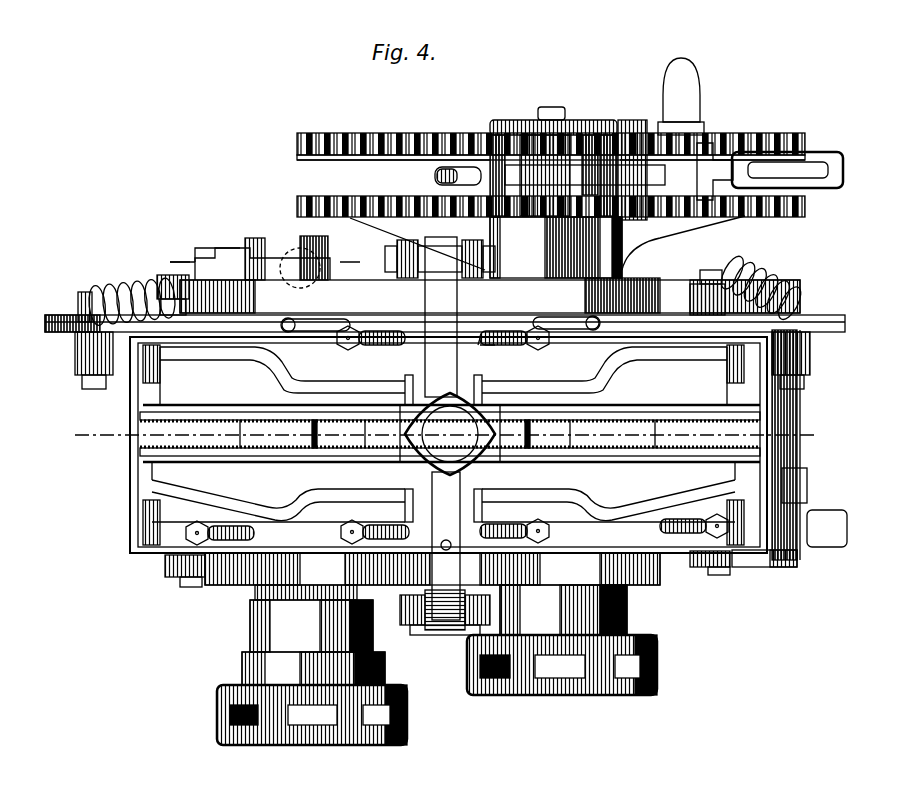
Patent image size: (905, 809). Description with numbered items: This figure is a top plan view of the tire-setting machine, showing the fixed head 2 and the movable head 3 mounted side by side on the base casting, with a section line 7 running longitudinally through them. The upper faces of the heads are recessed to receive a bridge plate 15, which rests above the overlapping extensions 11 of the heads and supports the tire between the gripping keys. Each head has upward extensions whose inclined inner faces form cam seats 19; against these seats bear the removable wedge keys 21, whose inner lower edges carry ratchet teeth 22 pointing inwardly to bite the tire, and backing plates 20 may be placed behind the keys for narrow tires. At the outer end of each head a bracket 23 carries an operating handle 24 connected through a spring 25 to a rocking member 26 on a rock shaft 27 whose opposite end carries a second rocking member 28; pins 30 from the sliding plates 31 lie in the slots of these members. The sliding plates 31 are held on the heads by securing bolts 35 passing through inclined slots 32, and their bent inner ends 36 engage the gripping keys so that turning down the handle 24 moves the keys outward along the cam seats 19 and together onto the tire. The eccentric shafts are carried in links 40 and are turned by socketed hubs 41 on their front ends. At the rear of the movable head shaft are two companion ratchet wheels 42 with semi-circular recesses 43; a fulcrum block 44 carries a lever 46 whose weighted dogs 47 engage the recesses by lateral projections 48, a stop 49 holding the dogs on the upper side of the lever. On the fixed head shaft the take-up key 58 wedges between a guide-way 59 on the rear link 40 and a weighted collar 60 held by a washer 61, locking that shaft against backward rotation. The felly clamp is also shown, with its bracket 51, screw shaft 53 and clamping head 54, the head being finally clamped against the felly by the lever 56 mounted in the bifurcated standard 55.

The fixed head 2 is at (135, 522).
The movable head 3 is at (785, 568).
The section line 7- 7 is at (444, 435).
The overlapping extensions 11 is at (273, 249).
The bridge plate 15 is at (347, 434).
The cam seats 19 is at (178, 358).
The backing plates 20 is at (222, 360).
The wedge key 21 is at (443, 434).
The serrations or teeth 22 is at (450, 434).
The bracket 23 is at (97, 380).
The operating handle 24 is at (65, 332).
The spring 25 is at (108, 284).
The rocking member 26 is at (188, 288).
The rock shaft 27 is at (800, 450).
The rocking member 28 is at (178, 577).
The pins 30 is at (192, 588).
The sliding plates 31 is at (457, 435).
The inclined slots 32 is at (496, 346).
The securing bolts 35 is at (545, 342).
The downwardly bent inner end 36 is at (478, 498).
The links 40 is at (490, 431).
The socketed hubs 41 is at (437, 665).
The ratchet wheels 42 is at (337, 156).
The semi-circular recesses 43 is at (400, 196).
The fulcrum block 44 is at (447, 167).
The lever 46 is at (818, 160).
The weighted dogs 47 is at (590, 160).
The lateral projections 48 is at (632, 205).
The stop 49 is at (722, 140).
The bracket 51 is at (468, 255).
The screw shaft 53 is at (450, 434).
The clamping head 54 is at (521, 434).
The standard 55 is at (430, 632).
The lever 56 is at (450, 635).
The take-up key 58 is at (220, 258).
The guide-way 59 is at (205, 262).
The weighted collar 60 is at (305, 272).
The washer 61 is at (255, 238).